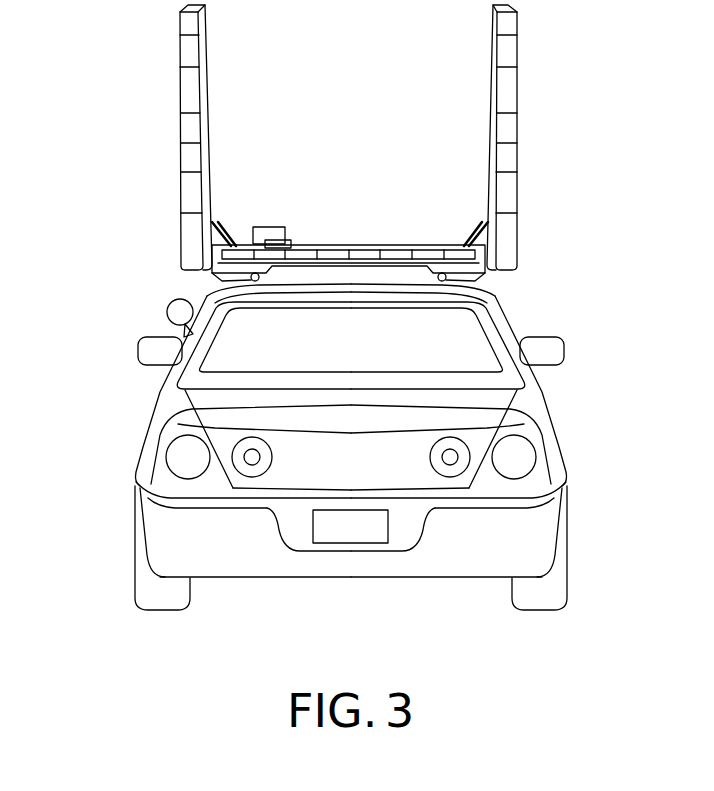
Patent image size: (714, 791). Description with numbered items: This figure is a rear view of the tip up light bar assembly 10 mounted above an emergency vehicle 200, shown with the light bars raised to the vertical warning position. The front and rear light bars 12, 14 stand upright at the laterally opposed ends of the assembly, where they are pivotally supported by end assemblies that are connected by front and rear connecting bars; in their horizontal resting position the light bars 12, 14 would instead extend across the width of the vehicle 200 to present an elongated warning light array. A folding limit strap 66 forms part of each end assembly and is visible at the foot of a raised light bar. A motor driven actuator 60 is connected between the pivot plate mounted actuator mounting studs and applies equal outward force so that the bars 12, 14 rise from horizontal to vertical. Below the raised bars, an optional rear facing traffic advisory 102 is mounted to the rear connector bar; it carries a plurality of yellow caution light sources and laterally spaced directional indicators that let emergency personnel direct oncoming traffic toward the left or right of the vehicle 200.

The tip up light bar assembly 10 is at (543, 243).
The front light bar 12 is at (512, 107).
The rear light bar 14 is at (187, 97).
The motor driven actuator 60 is at (262, 227).
The folding limit strap 66 is at (469, 244).
The traffic advisory 102 is at (480, 268).
The vehicle 200 is at (163, 445).